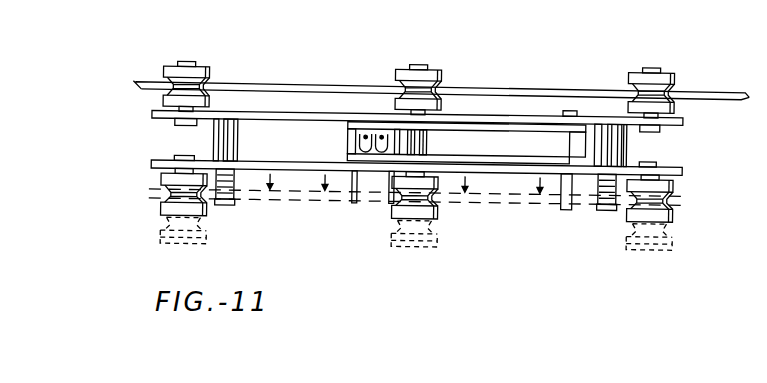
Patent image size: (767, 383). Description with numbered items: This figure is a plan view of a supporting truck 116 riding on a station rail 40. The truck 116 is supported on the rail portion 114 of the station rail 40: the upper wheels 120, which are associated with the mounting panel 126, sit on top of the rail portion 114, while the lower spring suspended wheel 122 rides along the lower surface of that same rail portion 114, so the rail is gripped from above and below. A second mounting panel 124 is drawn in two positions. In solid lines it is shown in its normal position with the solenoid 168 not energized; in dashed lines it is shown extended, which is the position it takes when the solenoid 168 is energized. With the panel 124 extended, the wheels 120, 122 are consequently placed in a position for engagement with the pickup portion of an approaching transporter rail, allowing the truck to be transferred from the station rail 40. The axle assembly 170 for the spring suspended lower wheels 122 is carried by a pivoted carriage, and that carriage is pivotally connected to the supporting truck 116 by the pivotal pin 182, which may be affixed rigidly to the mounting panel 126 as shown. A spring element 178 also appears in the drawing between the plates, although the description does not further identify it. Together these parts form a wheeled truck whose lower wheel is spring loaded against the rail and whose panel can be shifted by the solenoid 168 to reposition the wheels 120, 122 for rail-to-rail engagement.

The station rail 40 is at (308, 84).
The rail portion 114 is at (282, 88).
The supporting truck 116 is at (292, 41).
The upper wheels 120 is at (178, 64).
The lower spring suspended wheel 122 is at (420, 67).
The mounting panel 124 is at (249, 160).
The mounting panel 126 is at (231, 111).
The solenoid 168 is at (623, 153).
The axle assembly 170 is at (437, 130).
The spring 178 is at (354, 139).
The pivotal pin 182 is at (576, 112).